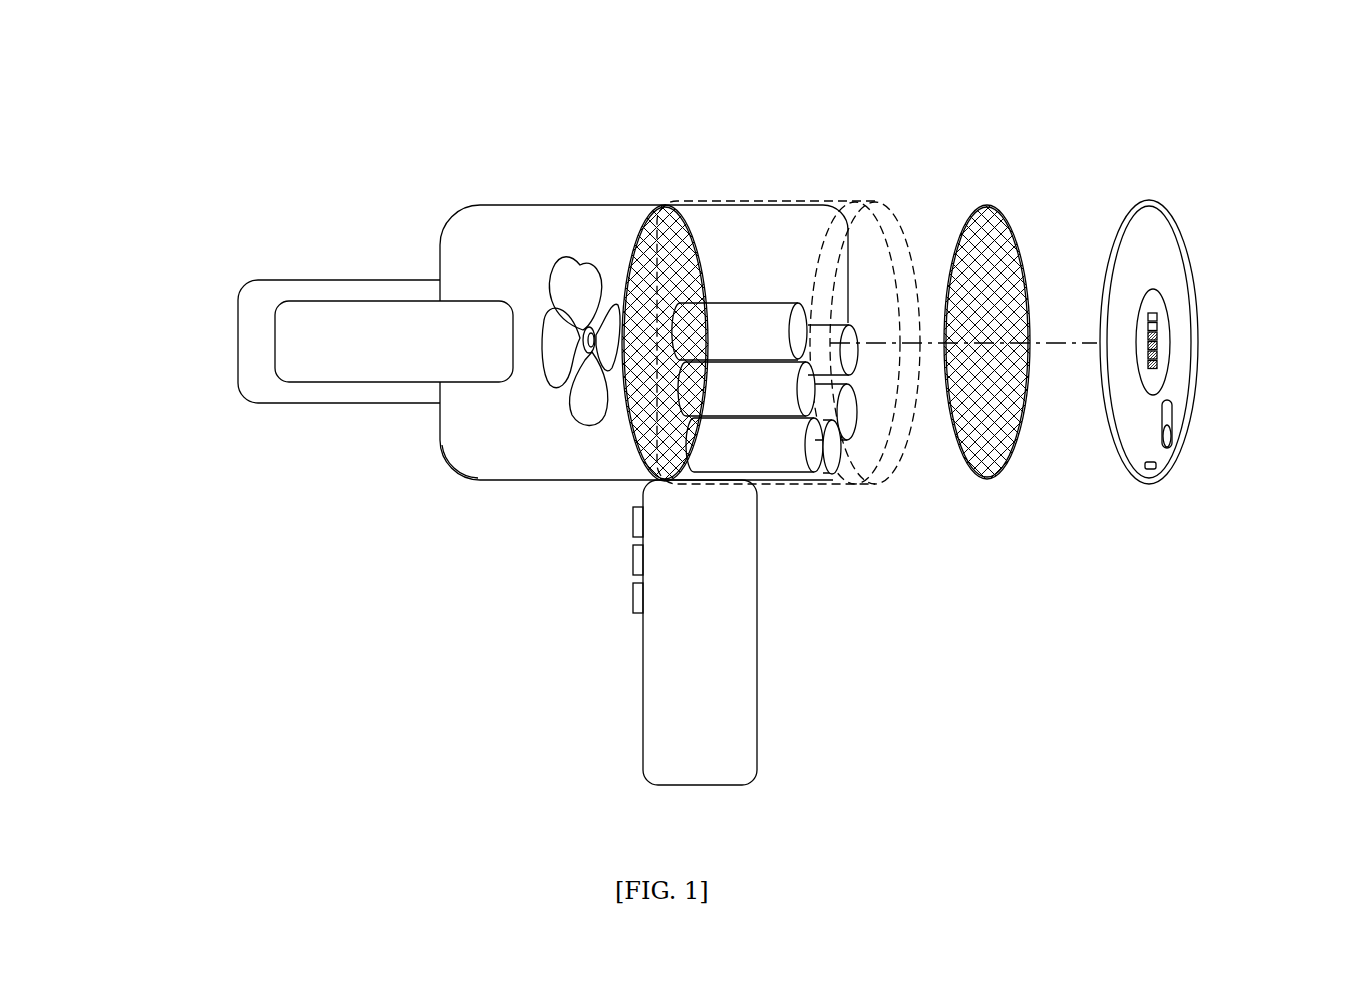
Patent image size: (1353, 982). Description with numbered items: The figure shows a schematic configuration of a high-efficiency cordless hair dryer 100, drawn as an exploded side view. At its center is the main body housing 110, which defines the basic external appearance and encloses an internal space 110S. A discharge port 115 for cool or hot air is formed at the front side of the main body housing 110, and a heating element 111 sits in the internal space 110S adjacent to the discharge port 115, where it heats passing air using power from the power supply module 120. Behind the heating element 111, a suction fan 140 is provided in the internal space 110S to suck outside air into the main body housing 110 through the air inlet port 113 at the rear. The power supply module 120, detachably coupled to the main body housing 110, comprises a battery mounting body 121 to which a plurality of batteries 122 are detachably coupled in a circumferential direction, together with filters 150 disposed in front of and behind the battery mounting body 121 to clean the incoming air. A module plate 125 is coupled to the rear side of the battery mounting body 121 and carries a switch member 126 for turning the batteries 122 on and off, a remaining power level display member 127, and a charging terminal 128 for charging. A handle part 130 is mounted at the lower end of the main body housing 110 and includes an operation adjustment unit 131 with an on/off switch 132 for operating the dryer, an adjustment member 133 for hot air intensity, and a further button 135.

The high-efficiency cordless hair dryer 100 is at (742, 48).
The main body housing 110 is at (532, 193).
The internal space 110S is at (498, 436).
The heating element 111 is at (360, 383).
The air inlet port 113 is at (910, 366).
The discharge port 115 is at (239, 338).
The power supply module 120 is at (1113, 598).
The battery mounting body 121 is at (843, 488).
The batteries 122 is at (782, 450).
The module plate 125 is at (1177, 402).
The switch member 126 is at (1172, 437).
The remaining power level display member 127 is at (1170, 315).
The charging terminal 128 is at (1157, 465).
The handle part 130 is at (682, 632).
The operation adjustment unit 131 is at (555, 556).
The on/off switch 132 is at (584, 597).
The adjustment member 133 is at (633, 560).
The button 135 is at (633, 522).
The suction fan 140 is at (580, 268).
The filters 150 is at (963, 255).